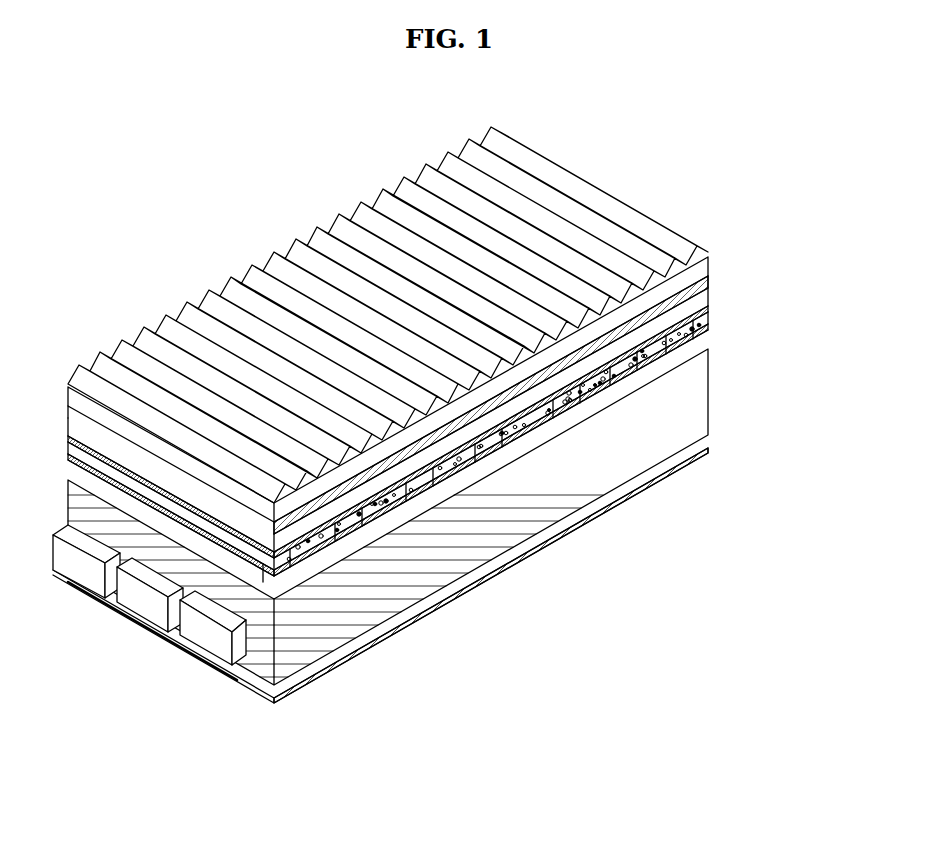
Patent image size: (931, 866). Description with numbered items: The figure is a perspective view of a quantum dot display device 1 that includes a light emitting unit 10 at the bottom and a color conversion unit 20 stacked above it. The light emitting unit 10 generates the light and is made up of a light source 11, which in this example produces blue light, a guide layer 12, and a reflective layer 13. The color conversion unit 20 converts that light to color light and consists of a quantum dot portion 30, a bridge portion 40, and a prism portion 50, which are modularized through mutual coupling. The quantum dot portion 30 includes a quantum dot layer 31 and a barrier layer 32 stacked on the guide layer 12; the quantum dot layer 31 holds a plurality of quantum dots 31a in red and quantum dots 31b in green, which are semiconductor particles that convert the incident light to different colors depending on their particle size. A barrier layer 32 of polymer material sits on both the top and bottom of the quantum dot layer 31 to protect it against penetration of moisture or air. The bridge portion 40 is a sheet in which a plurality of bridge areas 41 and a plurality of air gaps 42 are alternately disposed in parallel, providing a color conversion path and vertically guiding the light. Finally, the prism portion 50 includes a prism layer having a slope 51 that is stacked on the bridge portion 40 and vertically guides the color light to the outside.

The quantum dot display device 1 is at (295, 135).
The light emitting unit 10 is at (408, 750).
The light source 11 is at (210, 650).
The guide layer 12 is at (290, 623).
The reflective layer 13 is at (350, 657).
The color conversion unit 20 is at (210, 246).
The quantum dot portion 30 is at (785, 333).
The quantum dot layer 31 is at (667, 340).
The quantum dots 31a is at (515, 433).
The quantum dots 31b is at (580, 392).
The barrier layer 32 is at (673, 332).
The bridge portion 40 is at (785, 258).
The bridge areas 41 is at (702, 293).
The air gaps 42 is at (670, 315).
The prism portion 50 is at (697, 267).
The slope 51 is at (543, 193).